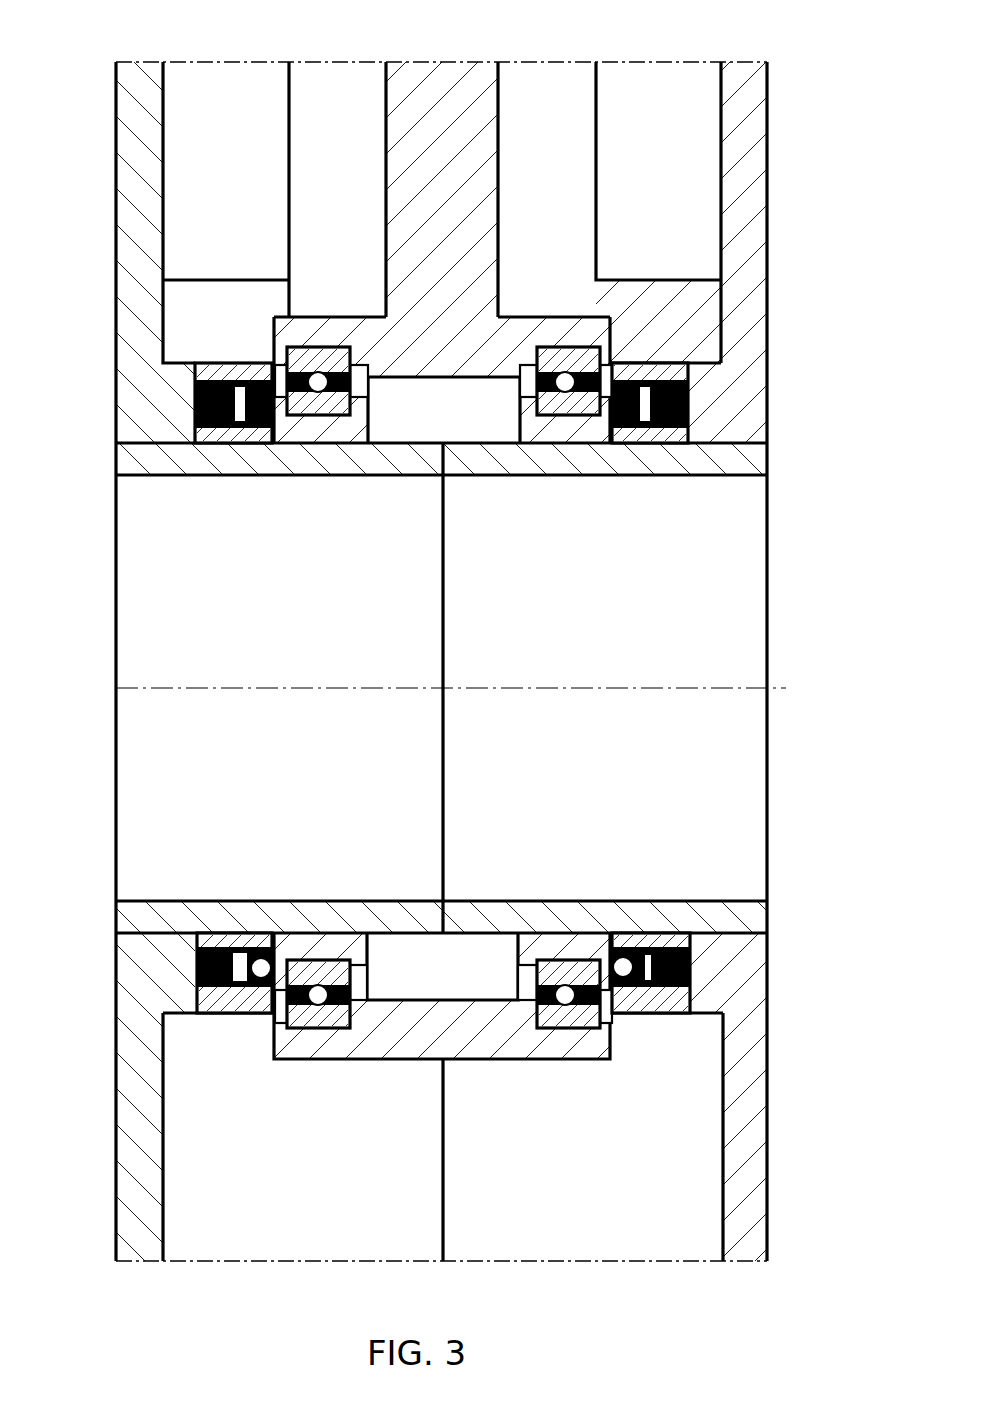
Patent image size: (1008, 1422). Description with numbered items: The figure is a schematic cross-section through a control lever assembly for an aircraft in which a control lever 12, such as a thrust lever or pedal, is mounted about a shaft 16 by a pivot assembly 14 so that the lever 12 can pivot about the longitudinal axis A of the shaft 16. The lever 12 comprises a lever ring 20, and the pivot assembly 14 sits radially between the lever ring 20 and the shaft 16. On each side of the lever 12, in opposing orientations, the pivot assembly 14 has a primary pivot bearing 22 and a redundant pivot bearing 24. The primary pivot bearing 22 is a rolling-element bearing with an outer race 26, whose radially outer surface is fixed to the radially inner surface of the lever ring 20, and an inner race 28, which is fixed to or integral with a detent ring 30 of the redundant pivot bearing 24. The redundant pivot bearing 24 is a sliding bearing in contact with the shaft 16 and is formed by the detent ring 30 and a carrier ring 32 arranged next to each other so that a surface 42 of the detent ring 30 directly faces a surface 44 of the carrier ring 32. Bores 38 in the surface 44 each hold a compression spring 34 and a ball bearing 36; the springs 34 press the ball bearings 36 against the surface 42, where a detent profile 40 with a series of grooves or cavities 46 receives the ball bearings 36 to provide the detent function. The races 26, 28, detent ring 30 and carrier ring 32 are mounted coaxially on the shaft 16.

The control lever 12 is at (440, 88).
The pivot assembly 14 is at (803, 313).
The shaft 16 is at (738, 462).
The lever ring 20 is at (332, 569).
The primary pivot bearing 22 is at (442, 462).
The redundant pivot bearing 24 is at (470, 965).
The outer race 26 is at (568, 1028).
The inner race 28 is at (590, 957).
The detent ring 30 is at (548, 428).
The carrier ring 32 is at (518, 723).
The compression spring 34 is at (243, 922).
The ball bearing 36 is at (265, 950).
The bore 38 is at (235, 427).
The detent profile 40 is at (681, 449).
The surface of the detent ring 42 is at (610, 433).
The surface of the carrier ring 44 is at (608, 427).
The grooves or cavities 46 is at (272, 417).
The longitudinal axis A is at (748, 690).